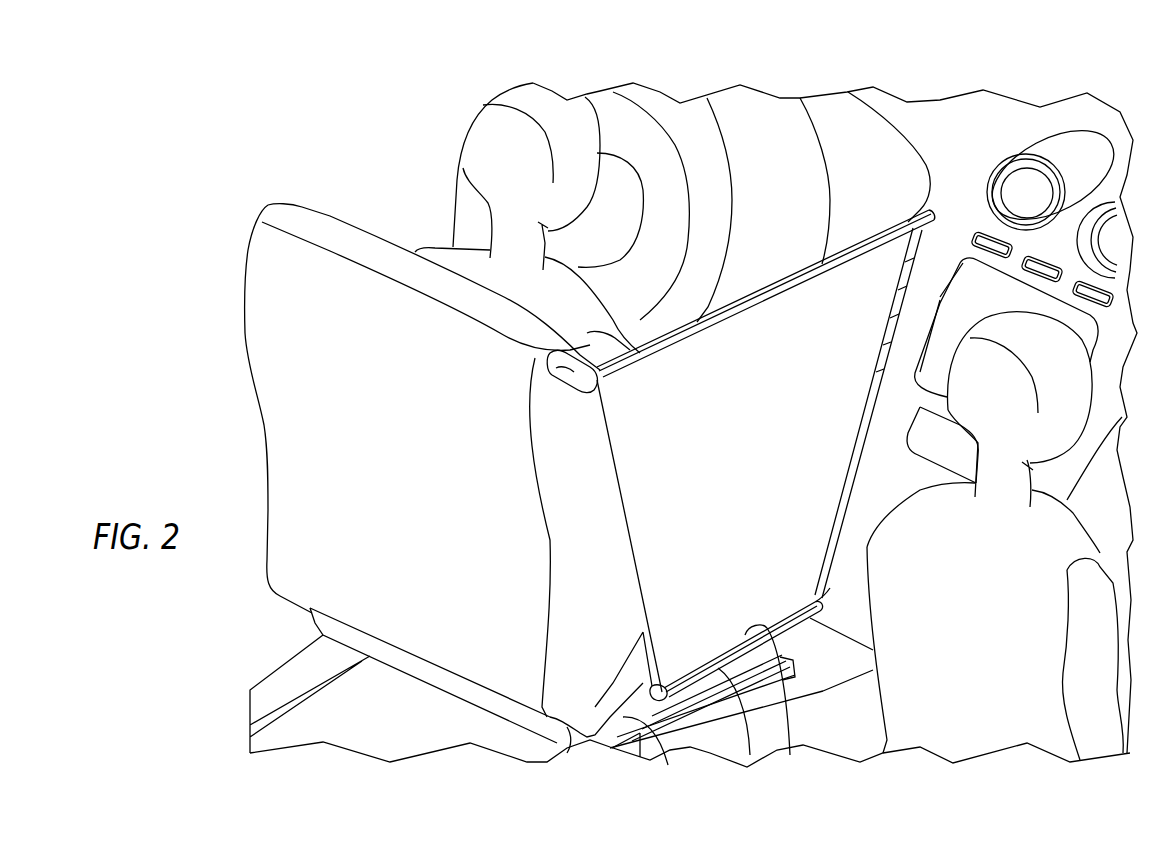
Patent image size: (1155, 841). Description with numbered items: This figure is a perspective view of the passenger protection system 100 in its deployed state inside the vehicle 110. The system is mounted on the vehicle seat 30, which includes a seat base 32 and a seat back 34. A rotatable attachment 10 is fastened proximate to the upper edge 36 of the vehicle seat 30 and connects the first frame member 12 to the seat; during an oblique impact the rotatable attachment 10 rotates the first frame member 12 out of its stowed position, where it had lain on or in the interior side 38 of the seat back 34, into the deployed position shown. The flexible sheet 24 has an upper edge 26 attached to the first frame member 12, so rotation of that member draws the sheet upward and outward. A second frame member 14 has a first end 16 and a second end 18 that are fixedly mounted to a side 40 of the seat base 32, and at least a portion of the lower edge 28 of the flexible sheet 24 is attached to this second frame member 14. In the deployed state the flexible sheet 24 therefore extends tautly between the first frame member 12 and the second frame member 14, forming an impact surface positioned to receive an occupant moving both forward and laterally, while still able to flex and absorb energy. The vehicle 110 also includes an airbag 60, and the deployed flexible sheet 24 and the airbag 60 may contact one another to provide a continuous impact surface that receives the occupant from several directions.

The passenger protection system 100 is at (194, 134).
The vehicle 110 is at (996, 73).
The rotatable attachment 10 is at (545, 380).
The first frame member 12 is at (747, 295).
The second frame member 14 is at (803, 623).
The first end 16 is at (707, 747).
The second end 18 is at (818, 605).
The flexible sheet 24 is at (680, 557).
The upper edge 26 is at (850, 252).
The lower edge 28 is at (790, 703).
The vehicle seat 30 is at (245, 317).
The seat base 32 is at (655, 760).
The seat back 34 is at (268, 250).
The upper edge 36 is at (320, 227).
The side 38 is at (567, 527).
The side 40 is at (775, 690).
The airbag 60 is at (750, 110).